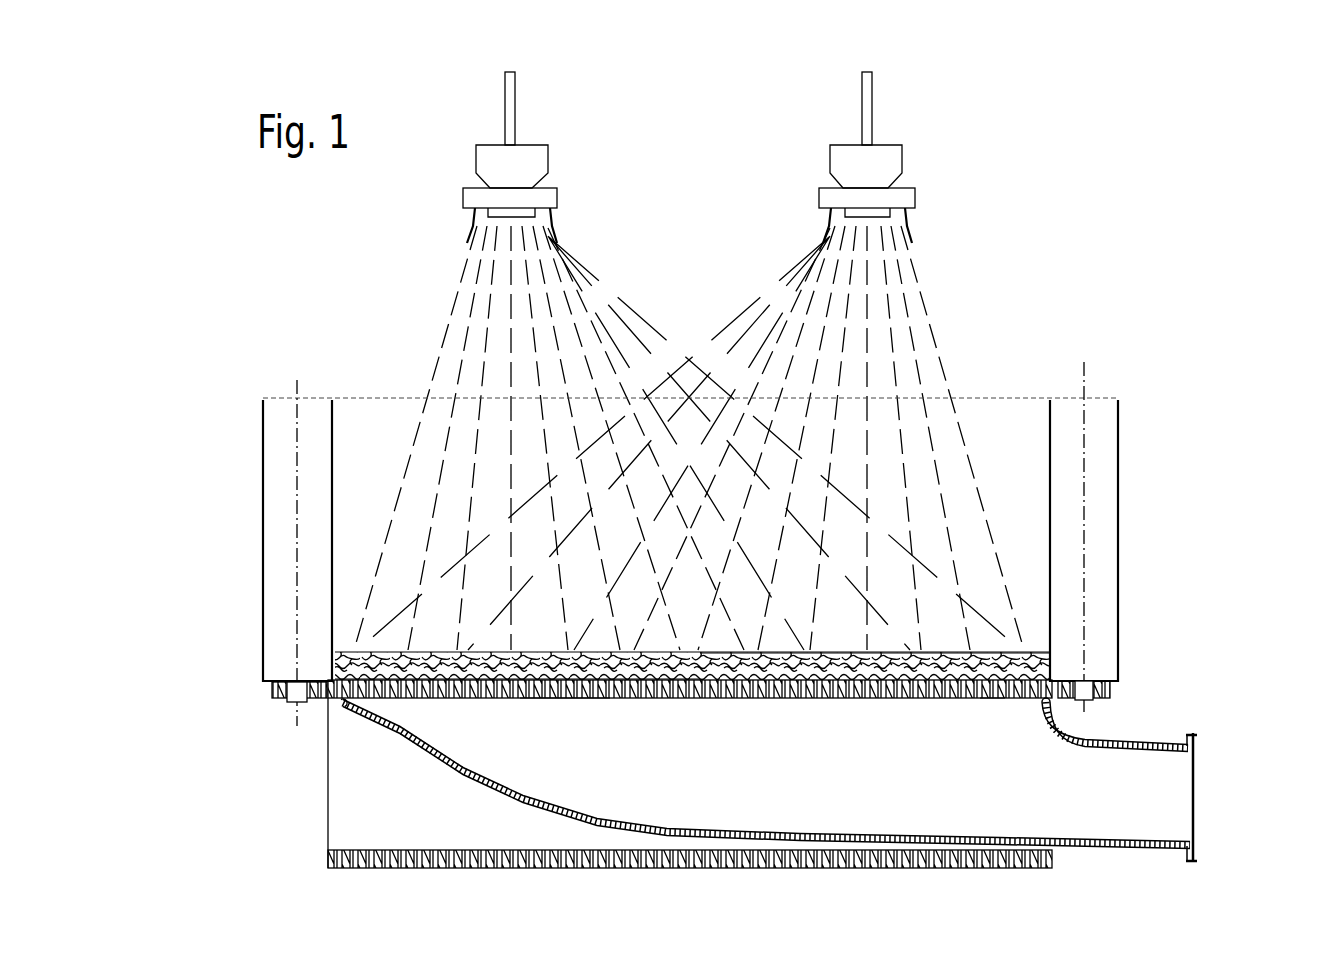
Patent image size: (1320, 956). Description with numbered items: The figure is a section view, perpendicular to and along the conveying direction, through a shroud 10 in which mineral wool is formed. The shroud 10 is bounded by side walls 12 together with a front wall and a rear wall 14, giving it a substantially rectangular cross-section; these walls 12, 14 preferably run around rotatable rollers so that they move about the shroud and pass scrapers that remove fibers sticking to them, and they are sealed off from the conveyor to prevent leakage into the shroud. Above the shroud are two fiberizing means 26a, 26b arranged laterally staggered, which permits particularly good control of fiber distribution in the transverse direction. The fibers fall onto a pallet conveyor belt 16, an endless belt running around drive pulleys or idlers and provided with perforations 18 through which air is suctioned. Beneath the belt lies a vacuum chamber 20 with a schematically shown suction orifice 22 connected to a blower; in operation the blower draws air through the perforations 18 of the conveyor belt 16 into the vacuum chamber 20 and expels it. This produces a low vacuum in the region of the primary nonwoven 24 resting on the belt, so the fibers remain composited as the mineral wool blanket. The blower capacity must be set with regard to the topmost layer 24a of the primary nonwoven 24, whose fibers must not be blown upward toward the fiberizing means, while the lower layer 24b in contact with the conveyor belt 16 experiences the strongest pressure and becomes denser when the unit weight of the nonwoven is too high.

The shroud 10 is at (718, 594).
The walls 12 is at (285, 420).
The rear wall 14 is at (1010, 430).
The pallet conveyor belt 16 is at (707, 698).
The perforations 18 is at (532, 698).
The vacuum chamber 20 is at (846, 787).
The suction orifice 22 is at (1196, 795).
The primary nonwoven 24 is at (684, 630).
The topmost layer 24a is at (997, 650).
The lower layer of mineral fibers 24b is at (340, 672).
The first fiberizing means 26a is at (528, 162).
The second fiberizing means 26b is at (882, 164).